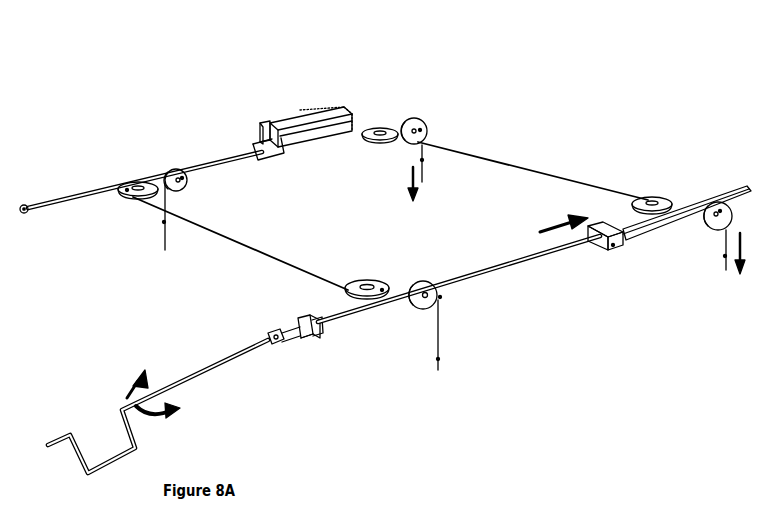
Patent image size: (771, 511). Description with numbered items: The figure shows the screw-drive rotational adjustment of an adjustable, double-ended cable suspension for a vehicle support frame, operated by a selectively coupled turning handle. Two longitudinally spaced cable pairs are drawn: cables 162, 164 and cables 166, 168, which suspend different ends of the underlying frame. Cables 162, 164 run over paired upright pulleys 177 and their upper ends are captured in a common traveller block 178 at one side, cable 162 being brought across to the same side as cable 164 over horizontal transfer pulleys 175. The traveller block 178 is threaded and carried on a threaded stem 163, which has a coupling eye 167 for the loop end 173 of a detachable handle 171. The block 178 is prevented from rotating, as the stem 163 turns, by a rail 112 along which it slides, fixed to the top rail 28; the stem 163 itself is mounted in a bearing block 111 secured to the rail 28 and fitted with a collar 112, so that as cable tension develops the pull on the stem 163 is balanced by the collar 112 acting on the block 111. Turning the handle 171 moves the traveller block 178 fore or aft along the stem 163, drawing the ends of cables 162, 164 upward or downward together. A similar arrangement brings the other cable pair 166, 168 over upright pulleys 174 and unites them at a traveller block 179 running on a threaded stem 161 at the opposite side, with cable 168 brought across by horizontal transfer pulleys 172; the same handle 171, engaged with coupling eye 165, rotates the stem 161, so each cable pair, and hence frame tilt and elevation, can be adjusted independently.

The top rail 28 is at (292, 119).
The bearing block 111 is at (312, 326).
The rail 112 is at (302, 336).
The threaded stem 161 is at (80, 192).
The cable 162 is at (420, 159).
The threaded stem 163 is at (333, 325).
The cable 164 is at (723, 256).
The coupling eye 165 is at (22, 206).
The cable 166 is at (163, 223).
The coupling eye 167 is at (284, 342).
The cable 168 is at (440, 360).
The detachable handle 171 is at (88, 425).
The horizontal transfer pulley 172 is at (129, 196).
The loop end 173 is at (270, 336).
The upright pulley 174 is at (182, 178).
The horizontal transfer pulley 175 is at (375, 133).
The upright pulley 177 is at (421, 130).
The traveller block 178 is at (613, 246).
The traveller block 179 is at (262, 124).